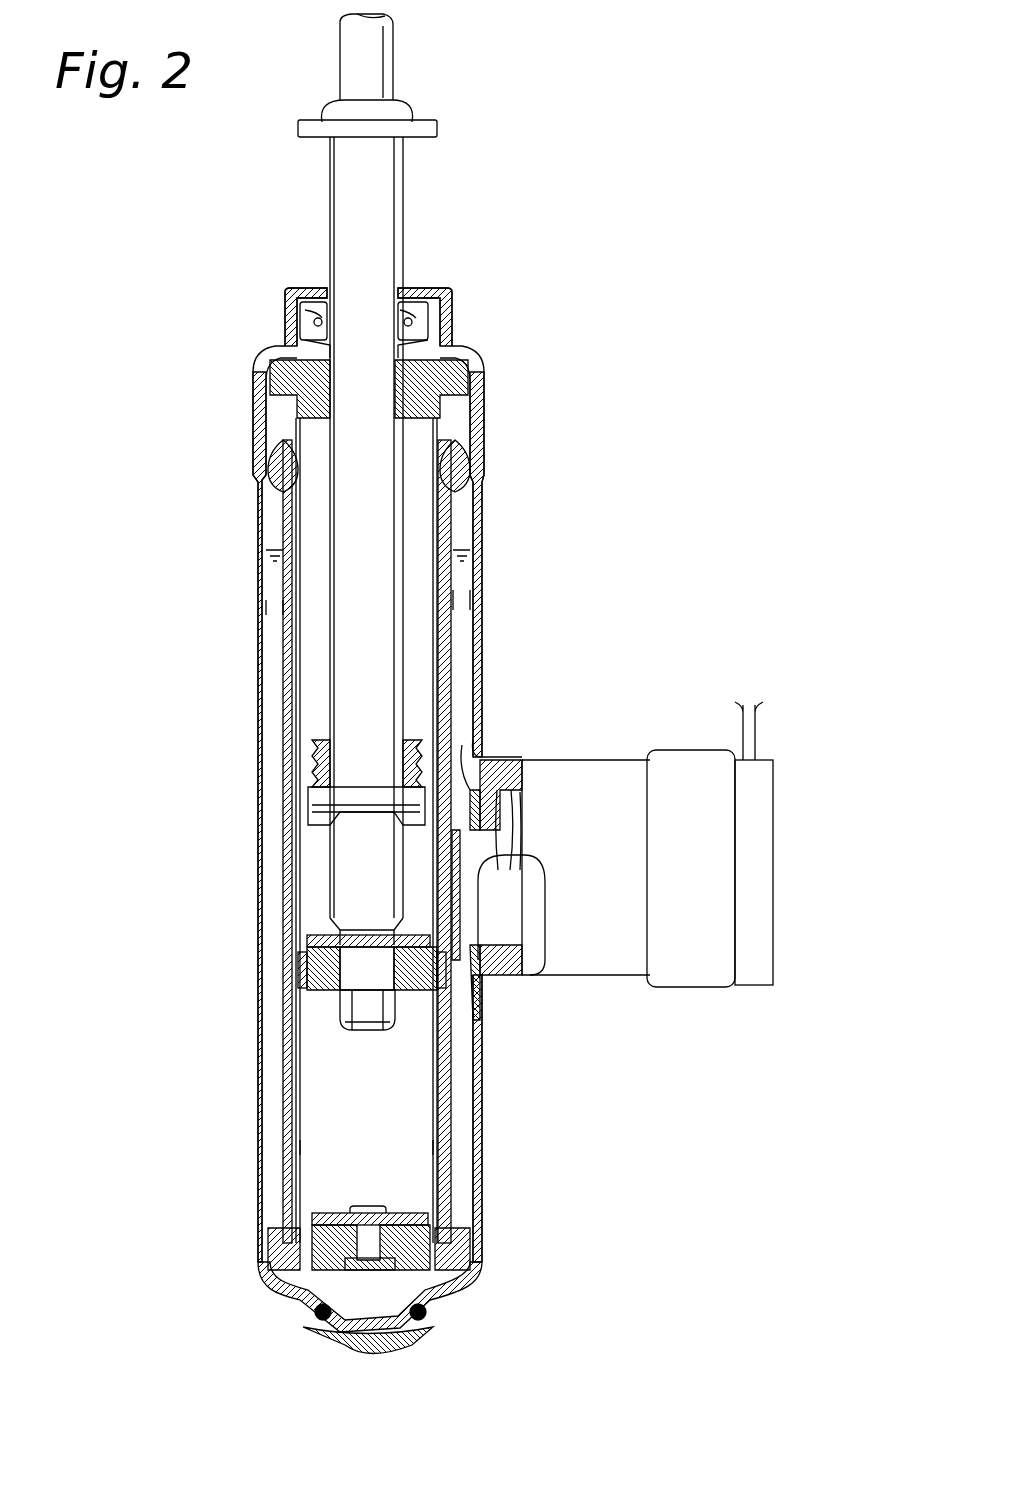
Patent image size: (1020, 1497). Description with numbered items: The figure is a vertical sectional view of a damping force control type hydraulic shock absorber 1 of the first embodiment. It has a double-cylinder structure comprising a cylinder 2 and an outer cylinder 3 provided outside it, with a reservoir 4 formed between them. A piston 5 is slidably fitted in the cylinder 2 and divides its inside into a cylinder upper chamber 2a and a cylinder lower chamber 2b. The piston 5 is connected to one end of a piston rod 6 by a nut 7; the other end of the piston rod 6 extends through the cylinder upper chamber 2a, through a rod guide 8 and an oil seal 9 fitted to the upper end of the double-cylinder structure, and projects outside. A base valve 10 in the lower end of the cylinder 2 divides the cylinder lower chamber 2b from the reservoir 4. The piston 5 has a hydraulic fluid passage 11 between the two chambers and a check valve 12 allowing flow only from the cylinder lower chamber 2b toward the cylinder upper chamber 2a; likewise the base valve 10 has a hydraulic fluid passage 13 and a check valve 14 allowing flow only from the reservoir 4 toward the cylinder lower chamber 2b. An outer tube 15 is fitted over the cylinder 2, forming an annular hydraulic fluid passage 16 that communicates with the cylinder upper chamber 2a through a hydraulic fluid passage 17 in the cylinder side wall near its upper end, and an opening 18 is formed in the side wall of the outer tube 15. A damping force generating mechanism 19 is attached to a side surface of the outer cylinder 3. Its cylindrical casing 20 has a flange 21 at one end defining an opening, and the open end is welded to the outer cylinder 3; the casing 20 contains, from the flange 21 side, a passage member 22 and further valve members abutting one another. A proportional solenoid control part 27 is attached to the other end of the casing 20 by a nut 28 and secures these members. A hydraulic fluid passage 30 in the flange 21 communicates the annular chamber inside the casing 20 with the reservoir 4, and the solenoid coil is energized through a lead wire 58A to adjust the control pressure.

The damping force control type hydraulic shock absorber 1 is at (688, 172).
The cylinder 2 is at (283, 542).
The cylinder upper chamber 2a is at (318, 720).
The cylinder lower chamber 2b is at (315, 1147).
The outer cylinder 3 is at (253, 452).
The reservoir 4 is at (276, 607).
The piston 5 is at (315, 957).
The piston rod 6 is at (356, 168).
The nut 7 is at (340, 1004).
The rod guide 8 is at (486, 372).
The oil seal 9 is at (455, 296).
The base valve 10 is at (402, 1205).
The hydraulic fluid passage 11 is at (300, 1003).
The check valve 12 is at (318, 937).
The hydraulic fluid passage 13 is at (292, 1278).
The check valve 14 is at (310, 1218).
The outer tube 15 is at (456, 548).
The annular hydraulic fluid passage 16 is at (466, 597).
The hydraulic fluid passage 17 is at (470, 492).
The opening 18 is at (545, 955).
The damping force generating mechanism 19 is at (586, 994).
The casing 20 is at (510, 757).
The flange 21 is at (480, 1022).
The passage member 22 is at (520, 792).
The proportional solenoid control part 27 is at (752, 837).
The nut 28 is at (703, 975).
The hydraulic fluid passage 30 is at (462, 757).
The lead wire 58A is at (760, 729).